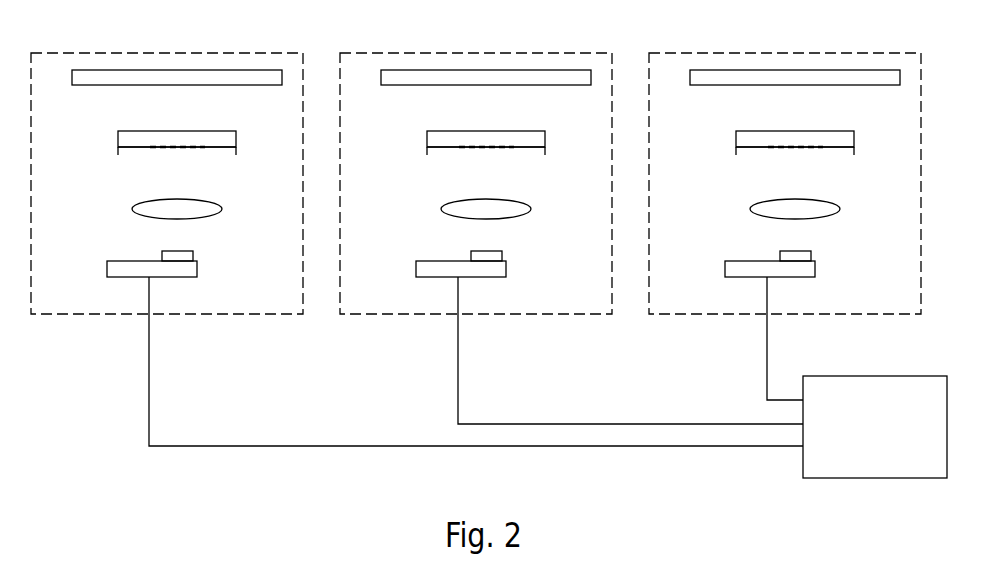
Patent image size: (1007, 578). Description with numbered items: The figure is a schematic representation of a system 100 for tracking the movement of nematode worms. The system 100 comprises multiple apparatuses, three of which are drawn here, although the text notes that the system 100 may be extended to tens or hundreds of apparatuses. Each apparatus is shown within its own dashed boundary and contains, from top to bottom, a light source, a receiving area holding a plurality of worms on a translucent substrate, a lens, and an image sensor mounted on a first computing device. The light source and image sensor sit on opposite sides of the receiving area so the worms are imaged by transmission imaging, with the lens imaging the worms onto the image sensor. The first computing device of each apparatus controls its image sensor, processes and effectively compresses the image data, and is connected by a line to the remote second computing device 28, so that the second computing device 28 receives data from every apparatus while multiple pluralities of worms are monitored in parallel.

The second computing device 28 is at (840, 466).
The system 100 is at (88, 460).